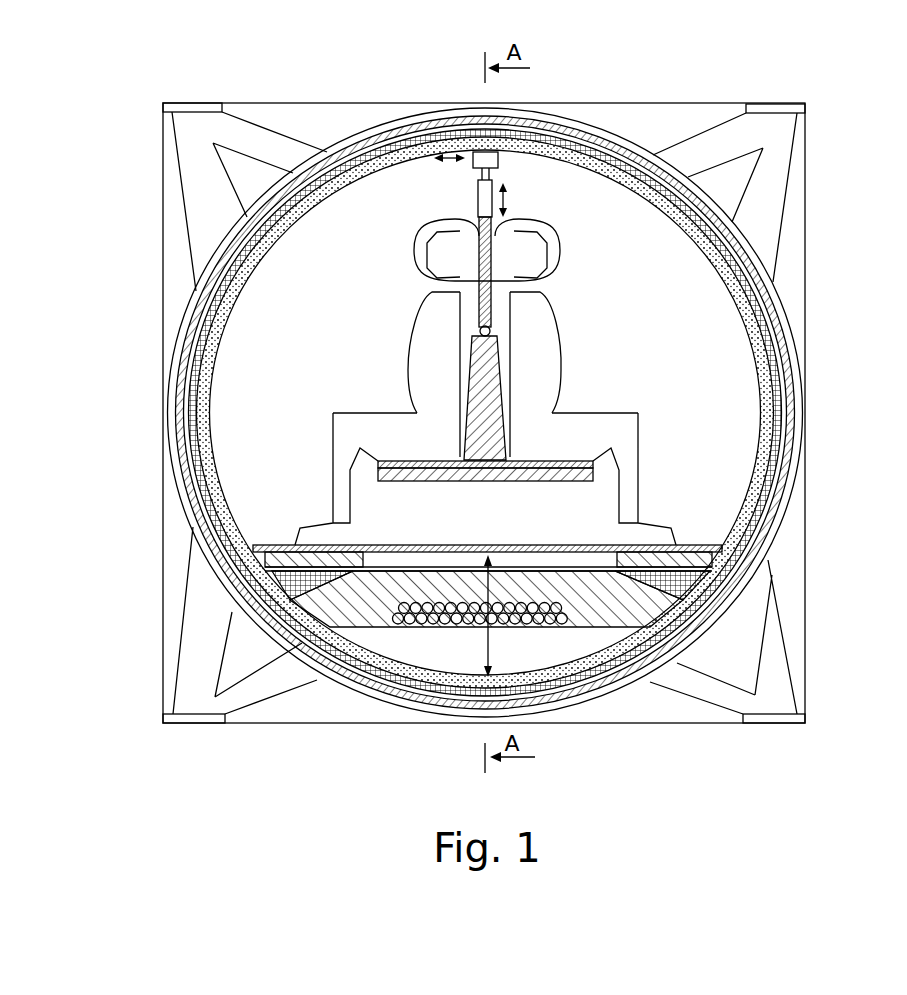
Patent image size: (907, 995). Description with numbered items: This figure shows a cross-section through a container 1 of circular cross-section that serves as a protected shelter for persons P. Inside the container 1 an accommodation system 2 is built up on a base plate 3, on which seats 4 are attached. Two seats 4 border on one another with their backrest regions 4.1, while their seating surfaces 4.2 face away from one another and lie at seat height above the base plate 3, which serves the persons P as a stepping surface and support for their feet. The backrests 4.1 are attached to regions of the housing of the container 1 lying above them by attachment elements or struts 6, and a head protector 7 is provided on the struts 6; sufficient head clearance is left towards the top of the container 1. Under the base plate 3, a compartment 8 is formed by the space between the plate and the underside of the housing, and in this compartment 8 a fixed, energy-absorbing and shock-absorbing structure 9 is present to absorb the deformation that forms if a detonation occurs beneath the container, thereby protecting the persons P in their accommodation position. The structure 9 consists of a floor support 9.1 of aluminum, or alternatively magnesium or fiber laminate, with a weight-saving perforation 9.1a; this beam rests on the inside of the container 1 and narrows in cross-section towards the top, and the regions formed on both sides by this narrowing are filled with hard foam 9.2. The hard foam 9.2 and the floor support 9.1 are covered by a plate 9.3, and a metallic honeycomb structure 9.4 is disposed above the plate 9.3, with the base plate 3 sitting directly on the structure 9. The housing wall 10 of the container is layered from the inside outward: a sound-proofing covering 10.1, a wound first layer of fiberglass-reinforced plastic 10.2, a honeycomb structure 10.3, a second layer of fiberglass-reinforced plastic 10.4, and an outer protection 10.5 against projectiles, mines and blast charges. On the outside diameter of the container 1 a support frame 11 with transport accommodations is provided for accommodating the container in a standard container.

The container 1 is at (614, 76).
The accommodation system 2 is at (506, 509).
The base plate 3 is at (522, 557).
The seats 4 is at (637, 437).
The backrest regions 4.1 is at (557, 403).
The seating surfaces 4.2 is at (478, 482).
The attachment elements/struts 6 is at (496, 282).
The head protector 7 is at (527, 247).
The compartment 8 is at (572, 643).
The structure 9 is at (625, 572).
The floor support 9.1 is at (656, 611).
The weight-saving perforation 9.1a is at (455, 612).
The hard foam 9.2 is at (285, 588).
The plate 9.3 is at (410, 560).
The metallic honeycomb structure 9.4 is at (705, 558).
The housing wall 10 is at (425, 412).
The sound-proofing covering 10.1 is at (215, 433).
The first layer of fiberglass-reinforced plastic 10.2 is at (203, 398).
The honeycomb structure 10.3 is at (192, 366).
The second layer of fiberglass-reinforced plastic 10.4 is at (186, 338).
The protection against projectiles, mines, and blast charges 10.5 is at (186, 306).
The support frame 11 is at (193, 133).
The persons P is at (437, 357).